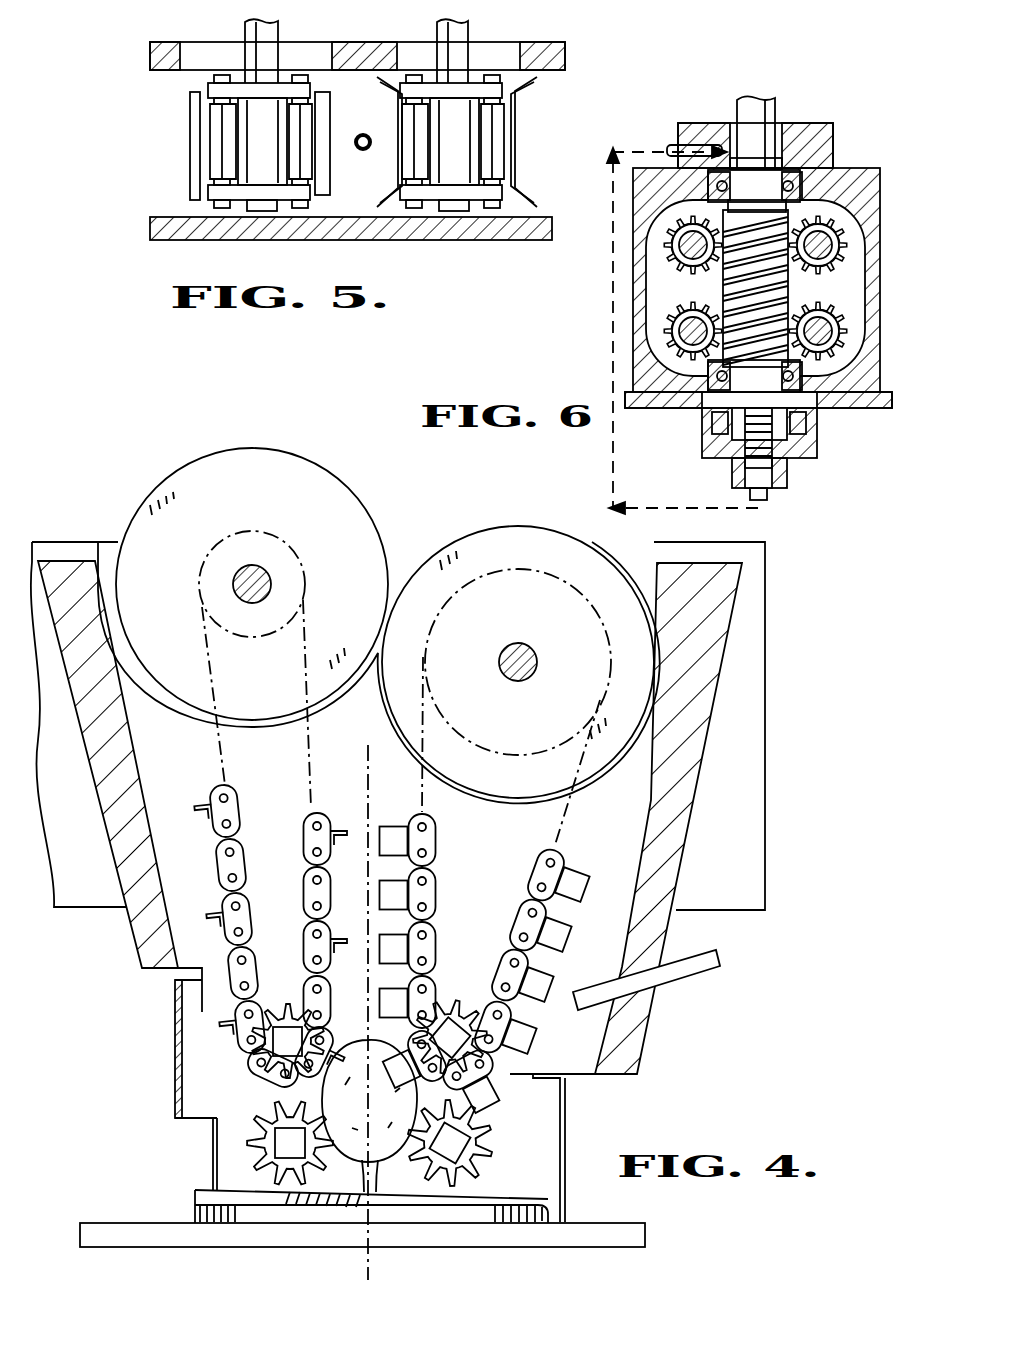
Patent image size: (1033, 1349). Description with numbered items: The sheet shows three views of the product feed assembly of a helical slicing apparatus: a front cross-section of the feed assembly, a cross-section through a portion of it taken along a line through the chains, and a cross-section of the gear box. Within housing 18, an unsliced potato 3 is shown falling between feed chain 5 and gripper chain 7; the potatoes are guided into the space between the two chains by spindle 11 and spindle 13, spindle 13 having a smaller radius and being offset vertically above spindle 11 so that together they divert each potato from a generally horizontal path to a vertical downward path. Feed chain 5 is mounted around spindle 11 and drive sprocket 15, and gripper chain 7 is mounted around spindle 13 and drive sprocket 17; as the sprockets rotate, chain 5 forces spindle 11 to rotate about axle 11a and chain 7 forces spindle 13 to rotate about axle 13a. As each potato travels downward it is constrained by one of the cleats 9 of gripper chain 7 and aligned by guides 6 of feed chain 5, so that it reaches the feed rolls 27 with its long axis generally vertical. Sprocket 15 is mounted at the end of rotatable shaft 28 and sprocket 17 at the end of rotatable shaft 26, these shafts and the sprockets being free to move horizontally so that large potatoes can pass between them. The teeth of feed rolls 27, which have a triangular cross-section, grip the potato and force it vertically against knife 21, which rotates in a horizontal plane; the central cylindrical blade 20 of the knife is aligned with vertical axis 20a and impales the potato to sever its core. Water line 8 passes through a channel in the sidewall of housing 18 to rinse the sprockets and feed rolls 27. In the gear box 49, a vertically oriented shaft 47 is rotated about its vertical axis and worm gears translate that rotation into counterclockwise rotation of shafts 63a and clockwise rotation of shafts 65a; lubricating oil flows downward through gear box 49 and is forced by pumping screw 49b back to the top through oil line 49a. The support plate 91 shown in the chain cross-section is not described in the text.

In FIG. 4, the potato 3 is at (392, 1170).
In FIG. 5, the feed chain 5 is at (416, 205).
In FIG. 4, the feed chain 5 is at (560, 858).
In FIG. 5, the guides 6 is at (390, 86).
In FIG. 4, the guides 6 is at (580, 880).
In FIG. 5, the gripper chain 7 is at (222, 208).
In FIG. 4, the gripper chain 7 is at (216, 792).
In FIG. 4, the water line 8 is at (703, 970).
In FIG. 5, the cleats 9 is at (190, 165).
In FIG. 4, the cleats 9 is at (195, 803).
In FIG. 4, the spindle 11 is at (528, 529).
In FIG. 4, the axle 11a is at (520, 648).
In FIG. 4, the spindle 13 is at (237, 451).
In FIG. 4, the axle 13a is at (256, 564).
In FIG. 5, the drive sprocket 15 is at (478, 205).
In FIG. 4, the drive sprocket 15 is at (470, 1008).
In FIG. 5, the drive sprocket 17 is at (283, 205).
In FIG. 4, the drive sprocket 17 is at (292, 1022).
In FIG. 5, the housing 18 is at (525, 240).
In FIG. 4, the housing 18 is at (74, 561).
In FIG. 4, the central cylindrical blade 20 is at (353, 1162).
In FIG. 4, the vertical axis 20a is at (368, 760).
In FIG. 4, the knife 21 is at (190, 1191).
In FIG. 5, the rotatable shaft 26 is at (248, 24).
In FIG. 4, the feed rolls 27 is at (258, 1118).
In FIG. 5, the rotatable shaft 28 is at (470, 24).
In FIG. 6, the shaft 47 is at (738, 107).
In FIG. 6, the gear box 49 is at (632, 345).
In FIG. 6, the oil line 49a is at (767, 500).
In FIG. 6, the pumping screw 49b is at (773, 443).
In FIG. 6, the shafts 63a is at (683, 243).
In FIG. 6, the shafts 65a is at (822, 222).
In FIG. 5, the support plate 91 is at (566, 55).